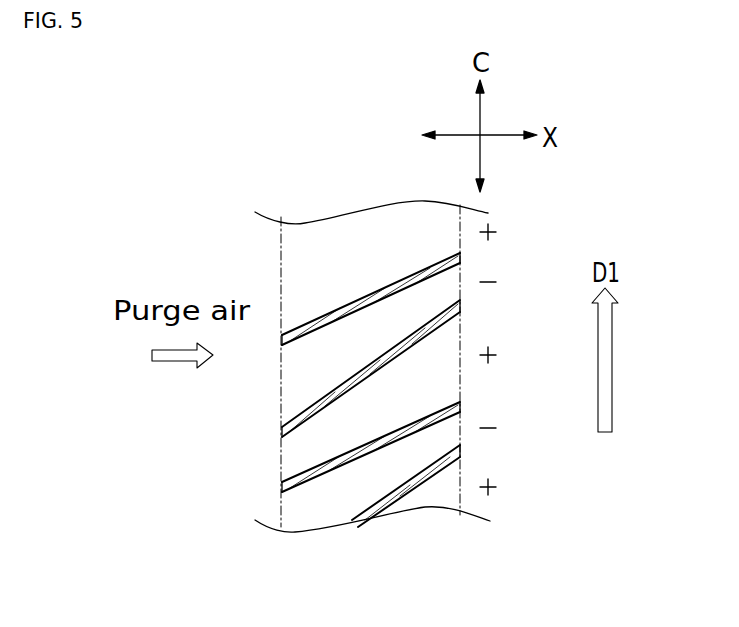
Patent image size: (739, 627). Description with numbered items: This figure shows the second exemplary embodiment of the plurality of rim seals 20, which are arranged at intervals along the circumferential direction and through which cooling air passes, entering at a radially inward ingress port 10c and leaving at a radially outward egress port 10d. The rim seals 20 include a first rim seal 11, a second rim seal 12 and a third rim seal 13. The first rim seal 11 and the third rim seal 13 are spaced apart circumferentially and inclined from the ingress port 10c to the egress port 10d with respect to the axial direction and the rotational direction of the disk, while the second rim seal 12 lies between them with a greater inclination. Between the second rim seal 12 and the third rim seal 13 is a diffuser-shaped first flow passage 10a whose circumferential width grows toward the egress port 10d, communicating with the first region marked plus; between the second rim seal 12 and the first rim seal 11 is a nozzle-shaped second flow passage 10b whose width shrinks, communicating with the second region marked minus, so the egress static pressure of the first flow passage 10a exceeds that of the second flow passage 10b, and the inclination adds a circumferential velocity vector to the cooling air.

The first flow passage 10a is at (430, 386).
The second flow passage 10b is at (337, 507).
The ingress port 10c is at (280, 453).
The egress port 10d is at (460, 362).
The first rim seal 11 is at (320, 317).
The second rim seal 12 is at (340, 388).
The third rim seal 13 is at (430, 424).
The rim seals 20 is at (375, 256).